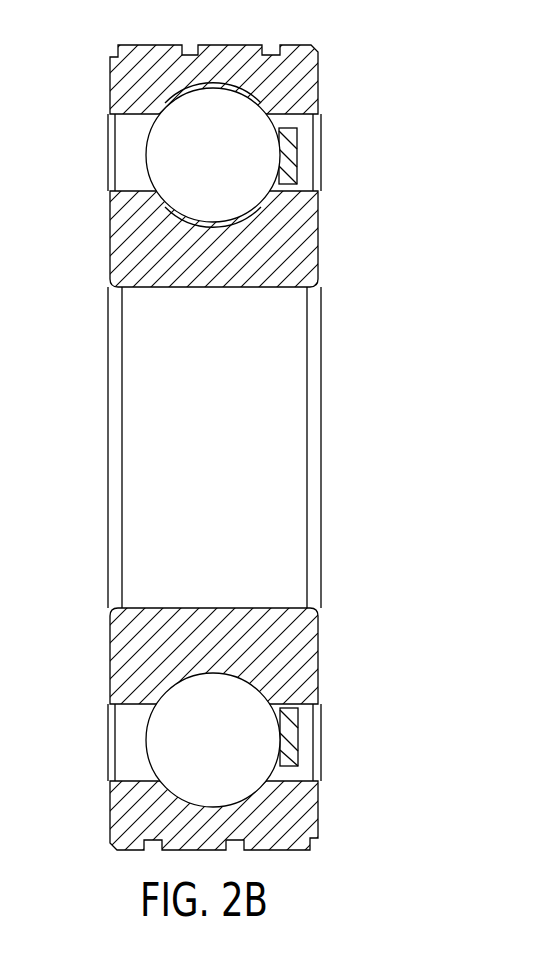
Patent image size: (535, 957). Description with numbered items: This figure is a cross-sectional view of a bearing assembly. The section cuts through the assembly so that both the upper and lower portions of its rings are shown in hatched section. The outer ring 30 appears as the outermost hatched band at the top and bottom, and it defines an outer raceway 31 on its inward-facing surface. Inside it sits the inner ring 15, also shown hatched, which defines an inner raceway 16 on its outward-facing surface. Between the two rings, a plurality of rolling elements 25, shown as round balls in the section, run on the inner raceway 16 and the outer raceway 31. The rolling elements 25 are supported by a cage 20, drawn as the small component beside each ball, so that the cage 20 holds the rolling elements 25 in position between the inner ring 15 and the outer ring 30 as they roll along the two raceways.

The outer ring 30 is at (100, 80).
The outer raceway 31 is at (243, 93).
The inner ring 15 is at (100, 218).
The inner raceway 16 is at (240, 220).
The cage 20 is at (293, 160).
The rolling elements 25 is at (178, 170).